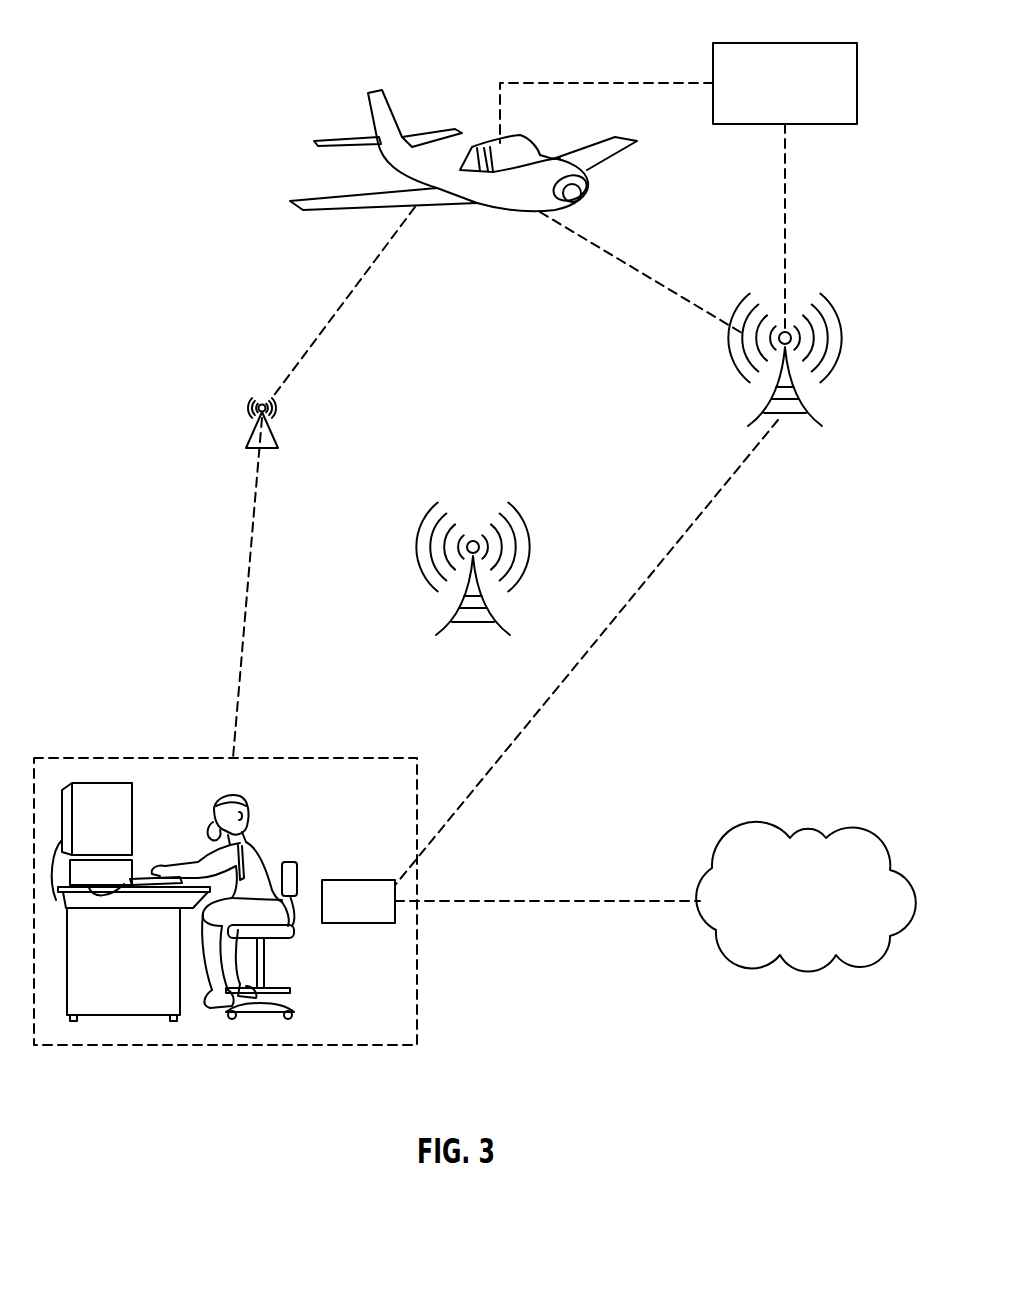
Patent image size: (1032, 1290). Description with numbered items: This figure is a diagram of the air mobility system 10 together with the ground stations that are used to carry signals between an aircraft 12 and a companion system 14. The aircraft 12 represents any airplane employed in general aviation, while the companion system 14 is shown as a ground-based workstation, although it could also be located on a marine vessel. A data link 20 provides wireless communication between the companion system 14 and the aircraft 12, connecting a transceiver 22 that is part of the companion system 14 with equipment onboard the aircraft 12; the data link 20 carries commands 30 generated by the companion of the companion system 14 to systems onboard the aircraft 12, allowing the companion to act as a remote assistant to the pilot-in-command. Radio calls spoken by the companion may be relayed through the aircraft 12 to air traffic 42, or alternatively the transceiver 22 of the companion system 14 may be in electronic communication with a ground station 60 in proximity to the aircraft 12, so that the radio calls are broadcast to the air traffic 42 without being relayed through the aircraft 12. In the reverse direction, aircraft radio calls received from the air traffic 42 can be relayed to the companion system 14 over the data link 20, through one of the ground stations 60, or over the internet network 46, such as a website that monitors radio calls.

The air mobility system 10 is at (184, 99).
The aircraft 12 is at (478, 143).
The companion system 14 is at (152, 1046).
The data link 20 is at (324, 330).
The transceiver 22 is at (372, 913).
The commands 30 is at (257, 833).
The air traffic 42 is at (779, 43).
The internet network 46 is at (805, 828).
The ground station 60 is at (805, 408).